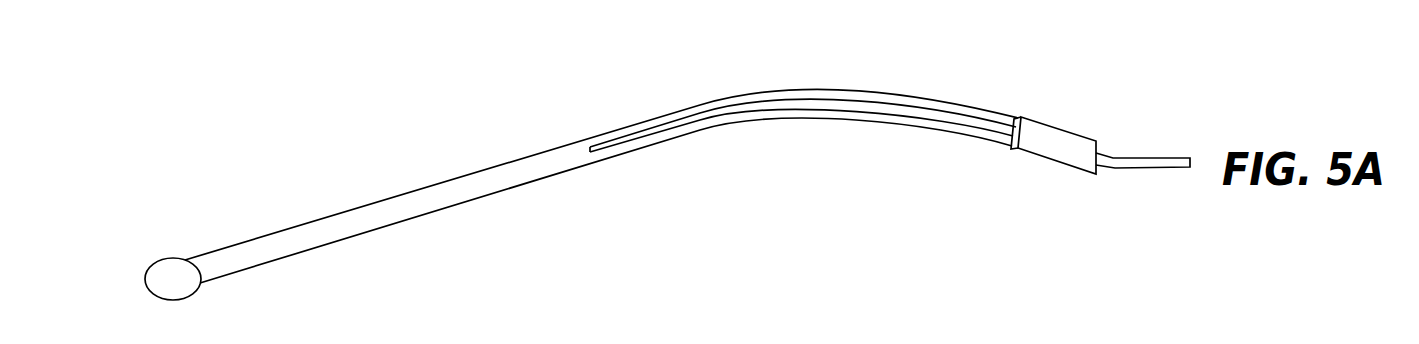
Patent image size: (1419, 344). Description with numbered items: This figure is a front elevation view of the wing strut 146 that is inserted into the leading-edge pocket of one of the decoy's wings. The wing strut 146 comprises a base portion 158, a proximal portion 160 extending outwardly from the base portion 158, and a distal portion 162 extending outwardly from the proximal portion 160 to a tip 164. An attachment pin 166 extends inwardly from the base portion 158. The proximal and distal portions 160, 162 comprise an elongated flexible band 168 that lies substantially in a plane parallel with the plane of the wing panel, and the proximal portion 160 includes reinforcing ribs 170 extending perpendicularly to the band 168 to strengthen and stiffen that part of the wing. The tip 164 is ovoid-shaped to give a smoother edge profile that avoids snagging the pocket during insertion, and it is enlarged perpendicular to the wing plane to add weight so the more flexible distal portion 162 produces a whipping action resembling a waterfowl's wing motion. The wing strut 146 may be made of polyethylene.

The wing strut 146 is at (580, 103).
The base portion 158 is at (1045, 117).
The proximal portion 160 is at (790, 92).
The distal portion 162 is at (380, 200).
The tip 164 is at (163, 258).
The attachment pin 166 is at (1157, 158).
The elongated flexible band 168 is at (442, 200).
The reinforcing ribs 170 is at (750, 116).